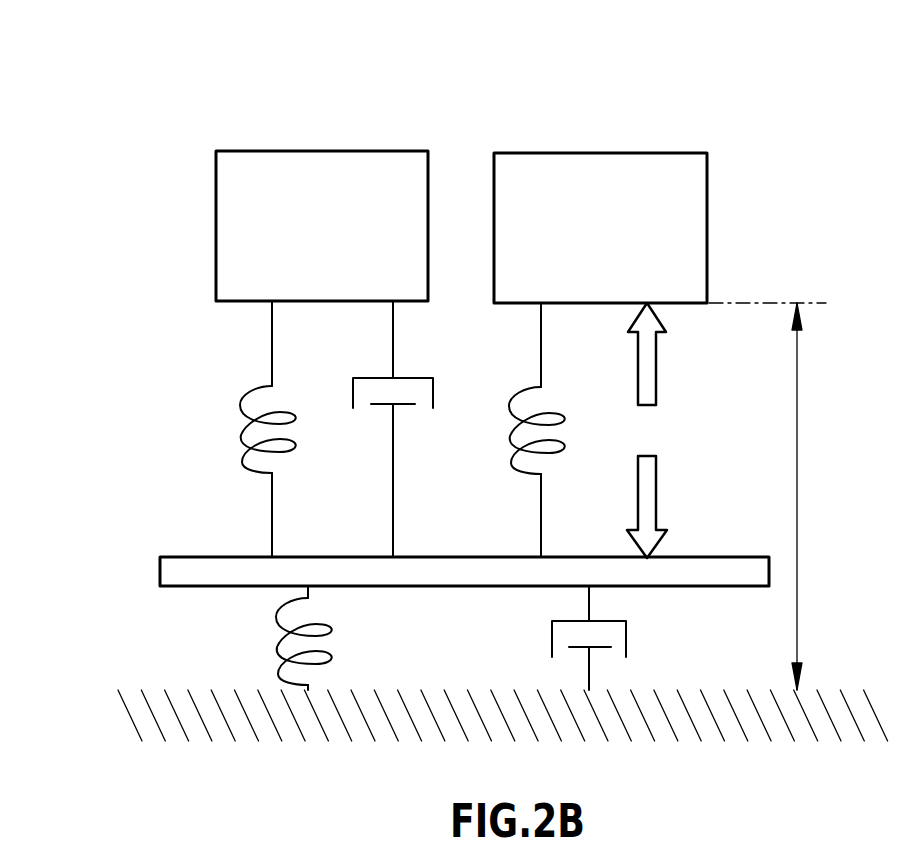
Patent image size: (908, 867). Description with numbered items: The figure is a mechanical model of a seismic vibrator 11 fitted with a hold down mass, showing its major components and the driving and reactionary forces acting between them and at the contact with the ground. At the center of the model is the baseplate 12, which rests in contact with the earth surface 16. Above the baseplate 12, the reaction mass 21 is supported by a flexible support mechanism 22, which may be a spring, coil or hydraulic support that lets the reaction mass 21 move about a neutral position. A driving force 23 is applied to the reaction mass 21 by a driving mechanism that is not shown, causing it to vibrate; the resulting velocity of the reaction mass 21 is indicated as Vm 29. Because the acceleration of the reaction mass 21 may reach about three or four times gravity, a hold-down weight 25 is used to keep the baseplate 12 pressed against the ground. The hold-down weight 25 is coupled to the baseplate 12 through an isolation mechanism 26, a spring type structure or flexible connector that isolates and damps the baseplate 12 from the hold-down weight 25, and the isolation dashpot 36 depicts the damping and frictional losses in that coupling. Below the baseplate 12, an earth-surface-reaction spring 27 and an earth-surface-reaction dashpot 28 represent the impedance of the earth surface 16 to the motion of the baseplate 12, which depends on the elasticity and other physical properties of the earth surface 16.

The seismic vibrator 11 is at (515, 88).
The hold-down weight 25 is at (216, 215).
The reaction mass 21 is at (707, 228).
The isolation mechanism 26 is at (247, 463).
The isolation dashpot 36 is at (378, 378).
The flexible support mechanism 22 is at (510, 434).
The driving force 23 is at (657, 370).
The velocity Vm 29 is at (797, 462).
The baseplate 12 is at (190, 557).
The earth-surface-reaction spring 27 is at (275, 662).
The earth-surface-reaction dashpot 28 is at (627, 637).
The earth surface 16 is at (830, 690).